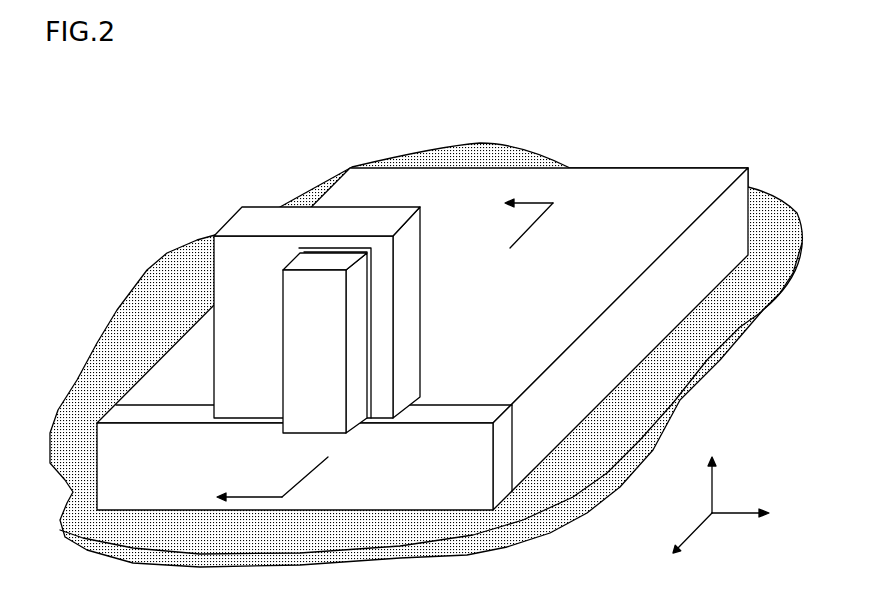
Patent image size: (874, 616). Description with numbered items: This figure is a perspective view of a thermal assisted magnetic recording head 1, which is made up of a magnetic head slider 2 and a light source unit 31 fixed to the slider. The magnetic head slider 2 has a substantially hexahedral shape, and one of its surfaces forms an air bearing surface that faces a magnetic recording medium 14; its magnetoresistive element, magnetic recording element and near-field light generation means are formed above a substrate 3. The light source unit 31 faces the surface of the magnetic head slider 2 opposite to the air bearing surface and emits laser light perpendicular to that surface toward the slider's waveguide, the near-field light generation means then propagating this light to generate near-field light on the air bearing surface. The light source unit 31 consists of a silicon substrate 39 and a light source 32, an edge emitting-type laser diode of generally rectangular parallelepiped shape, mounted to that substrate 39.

The thermal assisted magnetic recording head 1 is at (372, 122).
The magnetic head slider 2 is at (627, 156).
The substrate 3 is at (693, 302).
The magnetic recording medium 14 is at (88, 372).
The light source unit 31 is at (317, 263).
The light source 32 is at (288, 282).
The substrate 39 is at (290, 216).